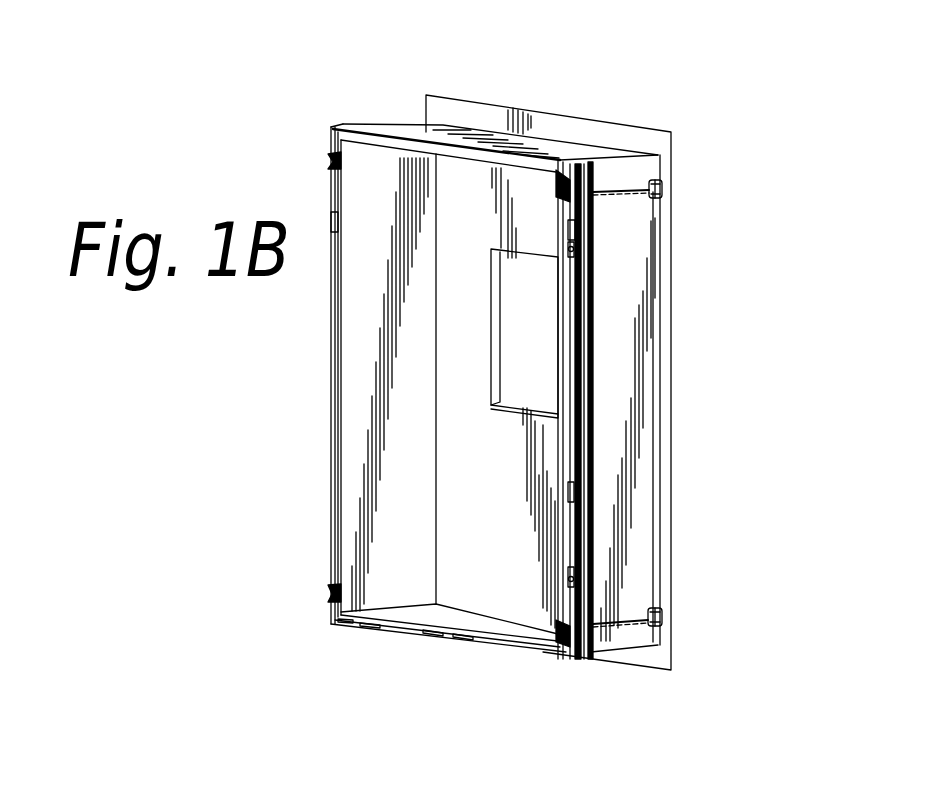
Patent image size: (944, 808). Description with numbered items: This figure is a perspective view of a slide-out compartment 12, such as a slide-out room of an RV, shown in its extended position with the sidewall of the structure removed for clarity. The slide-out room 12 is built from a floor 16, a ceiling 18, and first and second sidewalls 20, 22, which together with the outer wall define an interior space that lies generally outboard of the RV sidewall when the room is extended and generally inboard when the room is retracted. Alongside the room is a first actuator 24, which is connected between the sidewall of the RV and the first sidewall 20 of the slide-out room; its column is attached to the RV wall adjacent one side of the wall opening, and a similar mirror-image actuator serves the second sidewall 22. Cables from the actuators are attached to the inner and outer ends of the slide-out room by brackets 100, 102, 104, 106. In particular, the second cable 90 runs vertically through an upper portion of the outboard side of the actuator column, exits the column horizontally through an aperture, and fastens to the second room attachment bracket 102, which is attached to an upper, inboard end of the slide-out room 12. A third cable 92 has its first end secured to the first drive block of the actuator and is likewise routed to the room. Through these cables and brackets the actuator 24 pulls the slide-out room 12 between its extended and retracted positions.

The slide-out compartment 12 is at (287, 98).
The floor 16 is at (428, 607).
The ceiling 18 is at (400, 124).
The first sidewall 20 is at (408, 409).
The second sidewall 22 is at (614, 256).
The first actuator 24 is at (323, 614).
The second cable 90 is at (620, 184).
The third cable 92 is at (618, 616).
The bracket 100 is at (562, 156).
The second room attachment bracket 102 is at (654, 179).
The bracket 104 is at (654, 607).
The bracket 106 is at (320, 584).